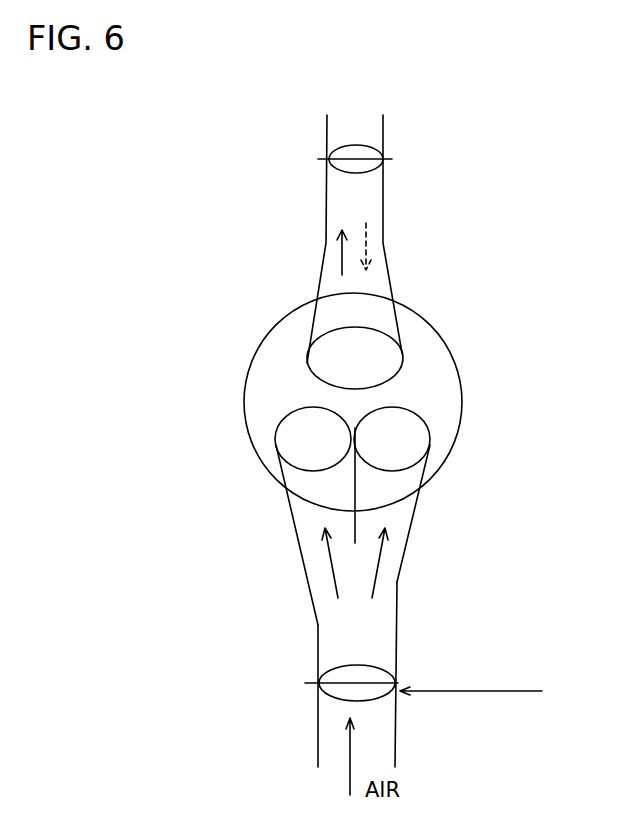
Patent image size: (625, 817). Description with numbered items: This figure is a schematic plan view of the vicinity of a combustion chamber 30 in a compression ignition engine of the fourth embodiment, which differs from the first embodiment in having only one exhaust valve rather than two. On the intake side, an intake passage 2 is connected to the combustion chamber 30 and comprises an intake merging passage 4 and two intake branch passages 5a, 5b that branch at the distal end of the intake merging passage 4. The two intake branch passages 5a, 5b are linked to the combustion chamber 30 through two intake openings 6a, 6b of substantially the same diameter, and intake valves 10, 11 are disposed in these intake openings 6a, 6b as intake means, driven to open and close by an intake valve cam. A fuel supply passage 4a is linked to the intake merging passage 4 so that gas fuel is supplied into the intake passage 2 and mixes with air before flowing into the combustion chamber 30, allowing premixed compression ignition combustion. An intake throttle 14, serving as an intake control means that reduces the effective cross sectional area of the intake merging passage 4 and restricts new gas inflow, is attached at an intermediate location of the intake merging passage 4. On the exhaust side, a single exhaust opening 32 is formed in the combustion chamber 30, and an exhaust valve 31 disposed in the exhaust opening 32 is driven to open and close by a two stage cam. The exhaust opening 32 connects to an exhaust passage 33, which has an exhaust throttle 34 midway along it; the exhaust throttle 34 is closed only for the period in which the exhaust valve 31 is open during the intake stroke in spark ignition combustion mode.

The intake passage 2 is at (216, 667).
The intake merging passage 4 is at (320, 662).
The fuel supply passage 4a is at (510, 691).
The intake branch passage 5a is at (302, 555).
The intake branch passage 5b is at (408, 547).
The intake opening 6a is at (277, 443).
The intake opening 6b is at (430, 445).
The intake valve 10 is at (300, 432).
The intake valve 11 is at (393, 439).
The intake throttle 14 is at (375, 702).
The combustion chamber 30 is at (477, 413).
The exhaust valve 31 is at (337, 357).
The exhaust opening 32 is at (400, 358).
The exhaust passage 33 is at (387, 248).
The exhaust throttle 34 is at (363, 173).